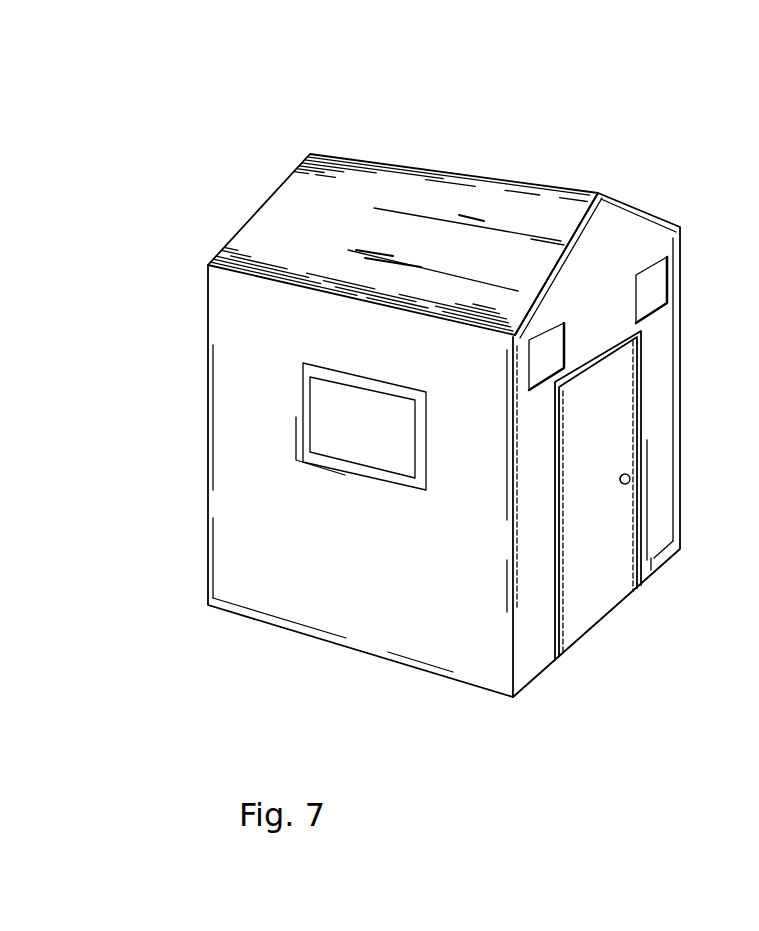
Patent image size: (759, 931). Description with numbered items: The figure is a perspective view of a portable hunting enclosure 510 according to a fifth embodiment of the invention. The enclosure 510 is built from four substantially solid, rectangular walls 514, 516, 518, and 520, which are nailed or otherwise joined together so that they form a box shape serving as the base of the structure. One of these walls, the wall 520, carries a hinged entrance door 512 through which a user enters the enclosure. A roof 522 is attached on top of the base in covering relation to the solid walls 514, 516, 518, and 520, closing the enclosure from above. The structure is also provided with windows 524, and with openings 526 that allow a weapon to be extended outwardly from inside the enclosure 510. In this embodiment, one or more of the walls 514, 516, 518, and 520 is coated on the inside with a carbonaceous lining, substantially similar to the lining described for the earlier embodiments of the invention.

The enclosure 510 is at (413, 377).
The hinged entrance door 512 is at (590, 583).
The wall 514 is at (270, 523).
The wall 516 is at (243, 210).
The wall 518 is at (672, 345).
The wall 520 is at (655, 423).
The roof 522 is at (443, 190).
The window 524 is at (645, 281).
The opening 526 is at (325, 410).